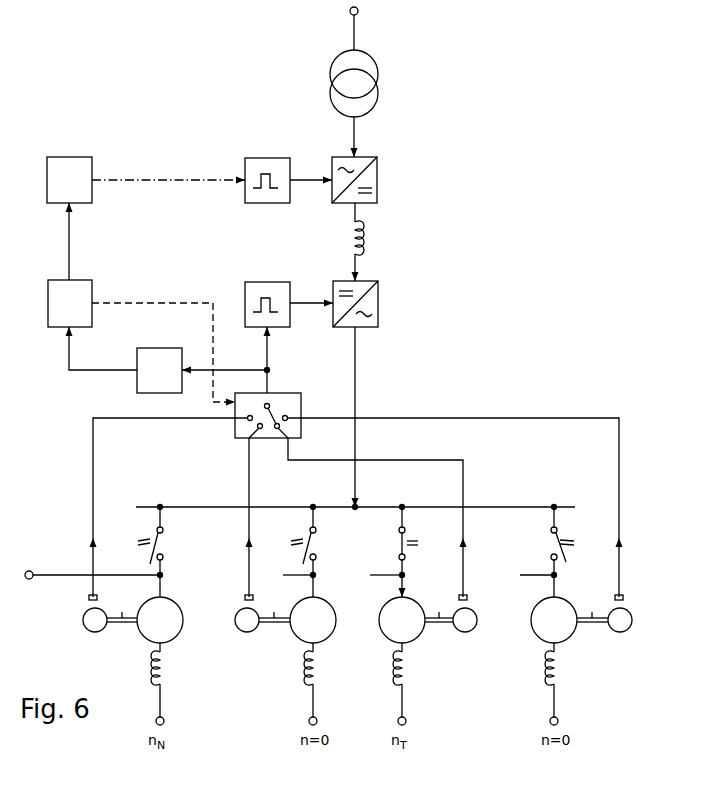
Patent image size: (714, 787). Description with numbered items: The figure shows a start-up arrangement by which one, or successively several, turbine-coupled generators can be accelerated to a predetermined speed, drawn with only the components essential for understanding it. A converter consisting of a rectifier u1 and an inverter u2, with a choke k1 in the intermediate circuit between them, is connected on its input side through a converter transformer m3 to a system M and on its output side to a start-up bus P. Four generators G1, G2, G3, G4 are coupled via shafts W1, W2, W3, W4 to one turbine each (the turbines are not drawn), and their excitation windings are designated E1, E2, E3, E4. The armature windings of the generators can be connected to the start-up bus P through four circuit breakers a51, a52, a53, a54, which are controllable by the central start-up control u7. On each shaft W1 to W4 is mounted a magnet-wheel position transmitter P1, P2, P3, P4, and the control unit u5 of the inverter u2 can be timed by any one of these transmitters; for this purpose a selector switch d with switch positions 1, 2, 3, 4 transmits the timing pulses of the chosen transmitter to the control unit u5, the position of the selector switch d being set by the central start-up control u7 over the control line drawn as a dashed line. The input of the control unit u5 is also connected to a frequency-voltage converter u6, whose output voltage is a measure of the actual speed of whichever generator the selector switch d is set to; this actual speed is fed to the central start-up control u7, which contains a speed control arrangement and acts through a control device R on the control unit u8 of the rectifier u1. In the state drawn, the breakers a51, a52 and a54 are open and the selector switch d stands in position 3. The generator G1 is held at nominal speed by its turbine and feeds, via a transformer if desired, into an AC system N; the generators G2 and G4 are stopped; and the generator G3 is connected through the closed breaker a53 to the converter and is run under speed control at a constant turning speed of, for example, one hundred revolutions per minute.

The system M is at (362, 27).
The converter transformer m3 is at (368, 103).
The rectifier u1 is at (377, 183).
The choke k1 is at (363, 240).
The inverter u2 is at (378, 305).
The control unit of the rectifier u8 is at (281, 157).
The control unit of the inverter u5 is at (281, 281).
The control device R is at (146, 218).
The central start-up control u7 is at (48, 303).
The frequency-voltage converter u6 is at (159, 347).
The selector switch d is at (286, 393).
The switch position 1 is at (168, 509).
The switch position 2 is at (244, 519).
The switch position 3 is at (371, 519).
The switch position 4 is at (455, 509).
The start-up bus P is at (420, 507).
The AC system N is at (91, 564).
The circuit breaker a51 is at (165, 552).
The circuit breaker a52 is at (314, 552).
The circuit breaker a53 is at (392, 552).
The circuit breaker a54 is at (545, 552).
The generator G1 is at (160, 620).
The generator G2 is at (313, 620).
The generator G3 is at (402, 620).
The generator G4 is at (554, 620).
The magnet-wheel position transmitter P1 is at (94, 632).
The magnet-wheel position transmitter P2 is at (246, 632).
The magnet-wheel position transmitter P3 is at (464, 632).
The magnet-wheel position transmitter P4 is at (619, 632).
The shaft W1 is at (122, 607).
The shaft W2 is at (274, 607).
The shaft W3 is at (438, 607).
The shaft W4 is at (592, 607).
The excitation winding E1 is at (162, 676).
The excitation winding E2 is at (315, 676).
The excitation winding E3 is at (404, 676).
The excitation winding E4 is at (556, 676).